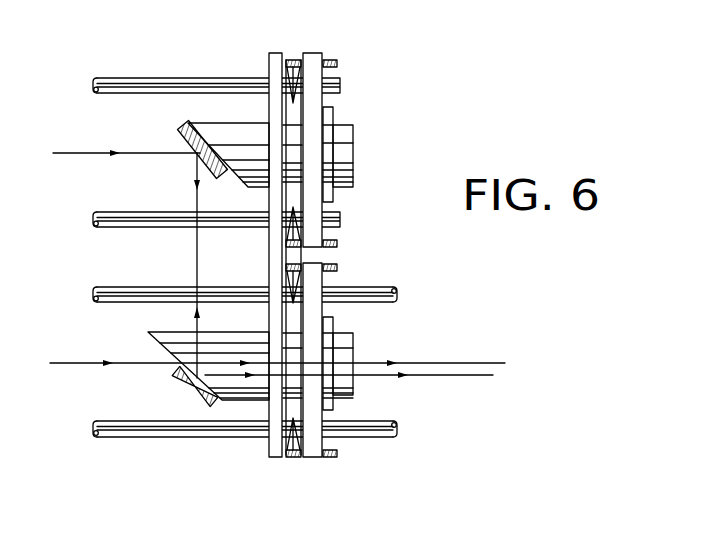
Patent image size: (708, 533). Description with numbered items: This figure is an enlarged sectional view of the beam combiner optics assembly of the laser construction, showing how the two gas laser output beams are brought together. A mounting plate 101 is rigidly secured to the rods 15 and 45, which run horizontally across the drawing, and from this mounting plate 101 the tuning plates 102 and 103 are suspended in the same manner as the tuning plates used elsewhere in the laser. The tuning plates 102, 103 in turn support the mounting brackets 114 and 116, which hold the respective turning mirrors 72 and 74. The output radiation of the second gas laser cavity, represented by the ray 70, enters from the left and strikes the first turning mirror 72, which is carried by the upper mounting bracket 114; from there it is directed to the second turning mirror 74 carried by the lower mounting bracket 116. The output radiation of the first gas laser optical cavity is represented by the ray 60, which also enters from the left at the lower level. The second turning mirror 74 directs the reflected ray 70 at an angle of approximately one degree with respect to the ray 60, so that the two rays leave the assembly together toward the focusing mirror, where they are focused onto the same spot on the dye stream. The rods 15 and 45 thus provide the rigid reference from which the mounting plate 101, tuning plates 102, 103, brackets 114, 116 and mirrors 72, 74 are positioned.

The rod 15 is at (117, 286).
The rod 45 is at (122, 78).
The ray 60 is at (67, 362).
The ray 70 is at (92, 122).
The first turning mirror 72 is at (182, 127).
The second turning mirror 74 is at (178, 378).
The mounting plate 101 is at (277, 53).
The tuning plate 102 is at (315, 53).
The tuning plate 103 is at (312, 458).
The mounting bracket 114 is at (212, 122).
The mounting bracket 116 is at (253, 401).